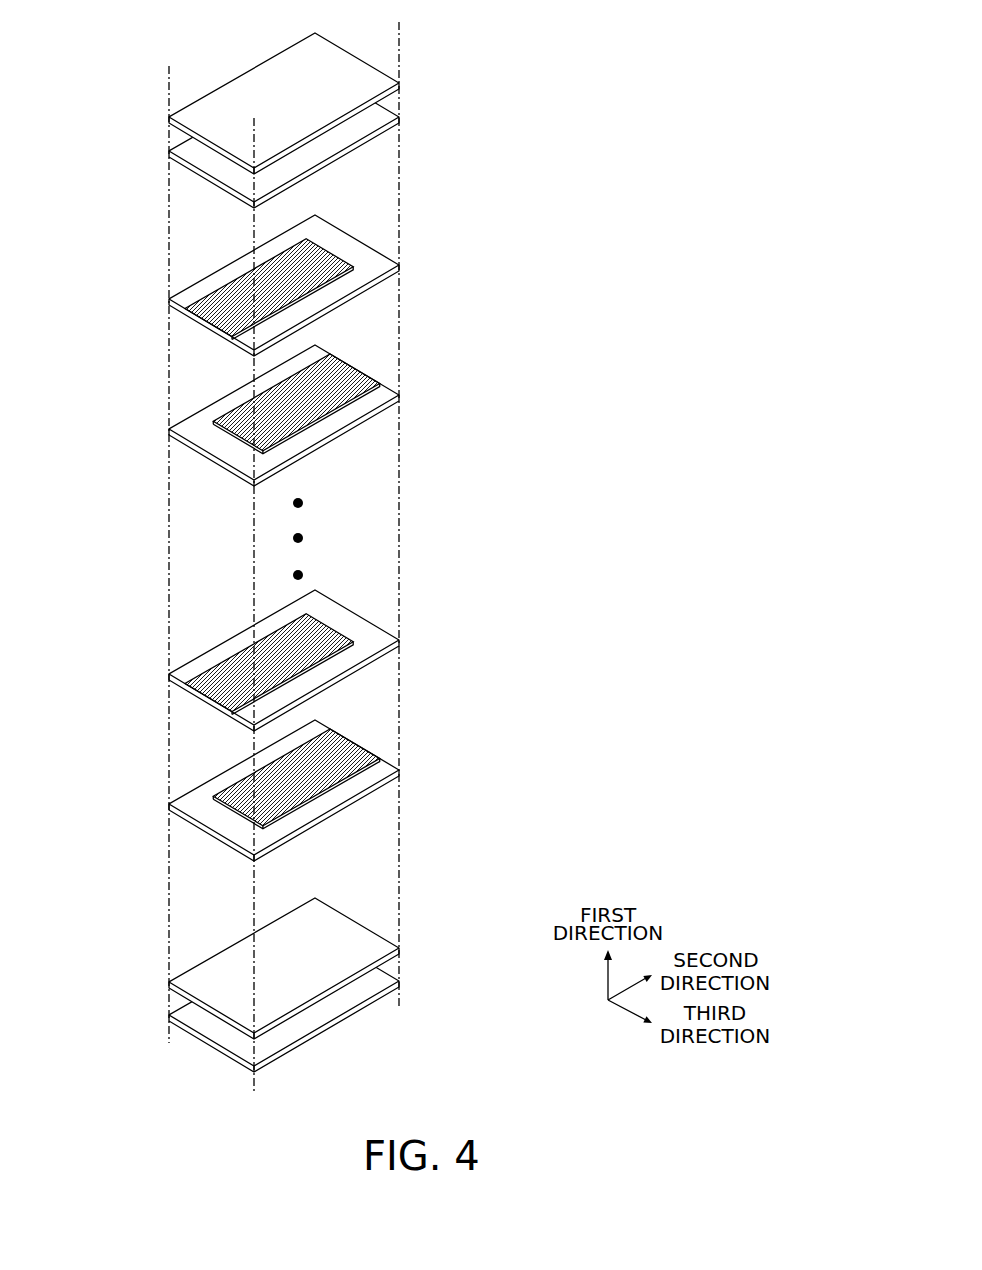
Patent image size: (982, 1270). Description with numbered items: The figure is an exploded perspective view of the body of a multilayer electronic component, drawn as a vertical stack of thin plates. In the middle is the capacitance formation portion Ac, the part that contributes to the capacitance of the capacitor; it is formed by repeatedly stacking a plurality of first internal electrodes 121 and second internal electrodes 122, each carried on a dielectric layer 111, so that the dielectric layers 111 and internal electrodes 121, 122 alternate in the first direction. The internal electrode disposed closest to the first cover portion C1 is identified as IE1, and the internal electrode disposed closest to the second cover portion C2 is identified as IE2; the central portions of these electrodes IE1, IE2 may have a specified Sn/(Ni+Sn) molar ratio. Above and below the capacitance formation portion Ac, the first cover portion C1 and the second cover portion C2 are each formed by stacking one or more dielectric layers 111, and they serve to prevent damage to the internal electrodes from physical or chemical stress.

The dielectric layer 111 is at (369, 80).
The first internal electrode 121 is at (192, 697).
The second internal electrode 122 is at (355, 362).
The internal electrode closest to the first cover portion IE1 is at (195, 318).
The internal electrode closest to the second cover portion IE2 is at (347, 747).
The first cover portion C1 is at (468, 67).
The second cover portion C2 is at (467, 927).
The capacitance formation portion Ac is at (468, 847).